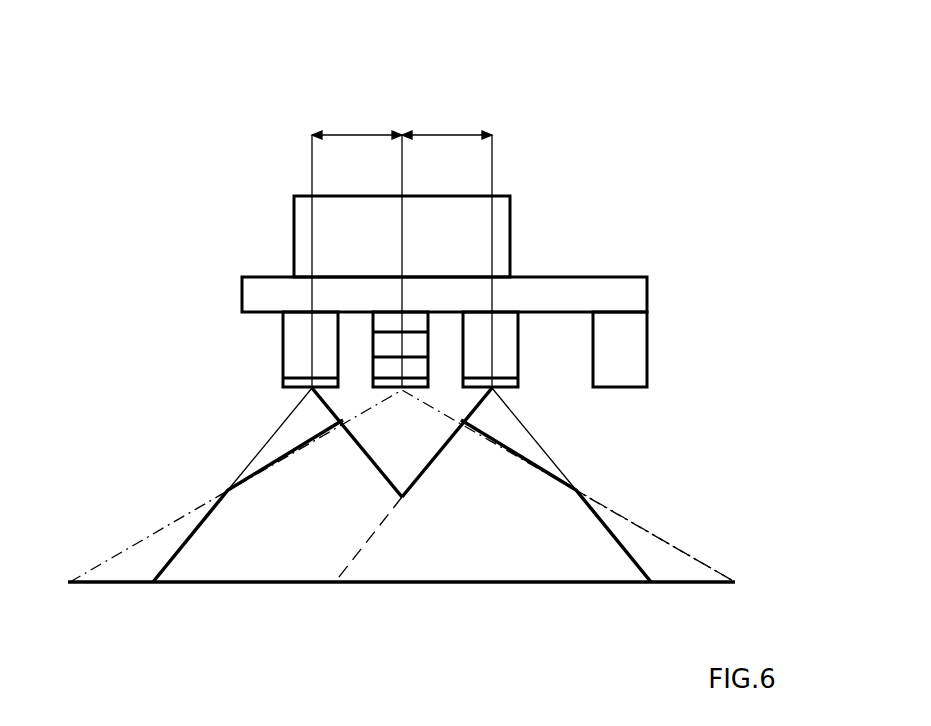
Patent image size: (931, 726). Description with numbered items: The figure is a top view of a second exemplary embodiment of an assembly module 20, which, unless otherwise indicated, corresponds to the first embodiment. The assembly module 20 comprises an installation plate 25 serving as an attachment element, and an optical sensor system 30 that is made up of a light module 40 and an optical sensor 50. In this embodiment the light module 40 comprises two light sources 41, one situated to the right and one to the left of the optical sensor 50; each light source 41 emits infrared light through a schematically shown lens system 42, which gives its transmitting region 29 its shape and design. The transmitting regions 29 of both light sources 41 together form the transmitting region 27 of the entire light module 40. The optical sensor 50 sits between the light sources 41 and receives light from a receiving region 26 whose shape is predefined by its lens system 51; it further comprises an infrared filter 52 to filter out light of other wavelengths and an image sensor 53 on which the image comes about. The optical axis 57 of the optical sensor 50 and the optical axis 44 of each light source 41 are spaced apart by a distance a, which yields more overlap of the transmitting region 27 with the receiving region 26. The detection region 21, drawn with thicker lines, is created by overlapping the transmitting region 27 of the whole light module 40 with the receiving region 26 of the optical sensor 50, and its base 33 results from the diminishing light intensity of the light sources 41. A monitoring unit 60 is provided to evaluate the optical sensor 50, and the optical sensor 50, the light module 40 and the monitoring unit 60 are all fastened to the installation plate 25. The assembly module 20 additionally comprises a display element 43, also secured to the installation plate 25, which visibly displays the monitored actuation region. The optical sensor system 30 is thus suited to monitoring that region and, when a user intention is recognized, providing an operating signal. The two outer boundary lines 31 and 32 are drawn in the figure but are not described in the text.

The assembly module 20 is at (640, 143).
The detection region 21 is at (403, 560).
The installation plate 25 is at (598, 293).
The receiving region 26 is at (122, 565).
The transmitting region 27 is at (615, 560).
The transmitting region 29 is at (248, 542).
The optical sensor system 30 is at (107, 147).
The left beam boundary 31 is at (195, 527).
The right beam boundary 32 is at (608, 525).
The base 33 is at (402, 497).
The light module 40 is at (163, 365).
The light source 41 is at (630, 423).
The lens system 42 is at (625, 460).
The display element 43 is at (637, 335).
The optical axis 44 is at (310, 178).
The optical sensor 50 is at (163, 230).
The lens system 51 is at (295, 313).
The infrared filter 52 is at (295, 340).
The image sensor 53 is at (295, 283).
The optical axis 57 is at (405, 181).
The monitoring unit 60 is at (302, 205).